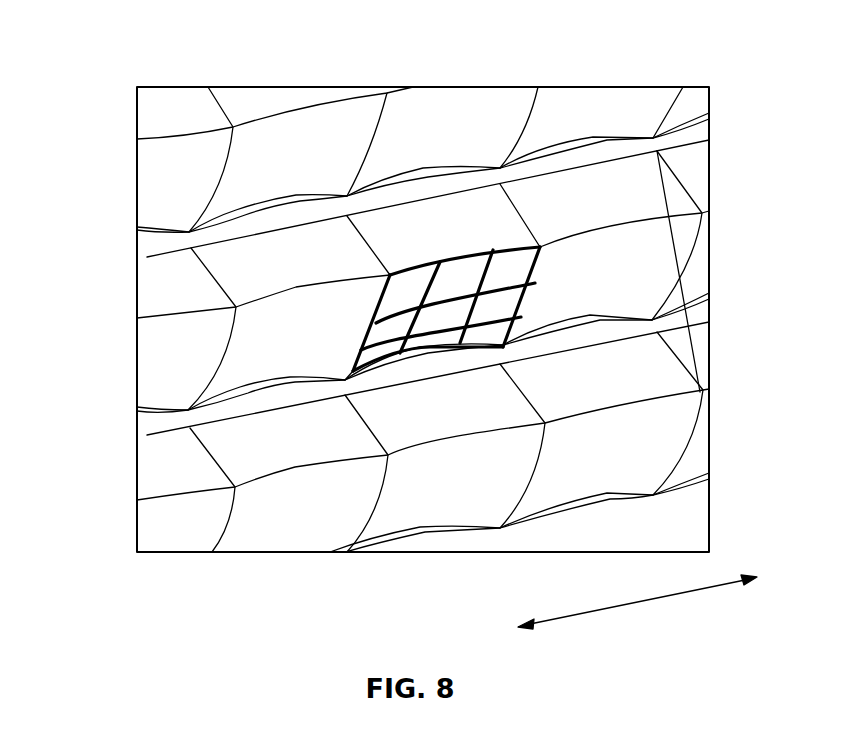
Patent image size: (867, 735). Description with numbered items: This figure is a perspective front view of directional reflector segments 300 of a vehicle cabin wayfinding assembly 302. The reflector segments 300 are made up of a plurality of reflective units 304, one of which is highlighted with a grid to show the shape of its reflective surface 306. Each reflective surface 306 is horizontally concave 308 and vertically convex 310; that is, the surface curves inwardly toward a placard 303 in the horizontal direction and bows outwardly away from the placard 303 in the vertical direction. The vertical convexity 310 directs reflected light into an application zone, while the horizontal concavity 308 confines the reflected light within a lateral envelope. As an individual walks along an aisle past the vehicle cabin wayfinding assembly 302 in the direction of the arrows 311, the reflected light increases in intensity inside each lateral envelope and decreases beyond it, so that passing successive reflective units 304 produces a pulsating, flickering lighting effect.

The directional reflector segments 300 is at (137, 165).
The vehicle cabin wayfinding assembly 302 is at (203, 62).
The placard 303 is at (580, 150).
The reflective unit 304 is at (307, 125).
The reflective surface 306 is at (446, 192).
The horizontal concavity 308 is at (462, 250).
The vertical convexity 310 is at (540, 273).
The arrows 311 is at (637, 603).